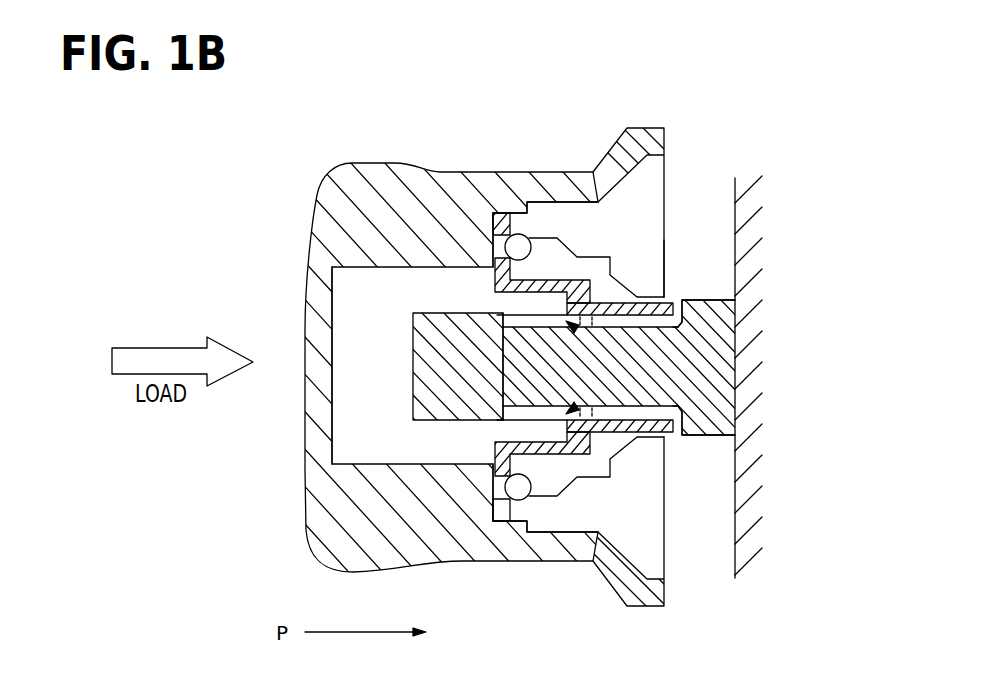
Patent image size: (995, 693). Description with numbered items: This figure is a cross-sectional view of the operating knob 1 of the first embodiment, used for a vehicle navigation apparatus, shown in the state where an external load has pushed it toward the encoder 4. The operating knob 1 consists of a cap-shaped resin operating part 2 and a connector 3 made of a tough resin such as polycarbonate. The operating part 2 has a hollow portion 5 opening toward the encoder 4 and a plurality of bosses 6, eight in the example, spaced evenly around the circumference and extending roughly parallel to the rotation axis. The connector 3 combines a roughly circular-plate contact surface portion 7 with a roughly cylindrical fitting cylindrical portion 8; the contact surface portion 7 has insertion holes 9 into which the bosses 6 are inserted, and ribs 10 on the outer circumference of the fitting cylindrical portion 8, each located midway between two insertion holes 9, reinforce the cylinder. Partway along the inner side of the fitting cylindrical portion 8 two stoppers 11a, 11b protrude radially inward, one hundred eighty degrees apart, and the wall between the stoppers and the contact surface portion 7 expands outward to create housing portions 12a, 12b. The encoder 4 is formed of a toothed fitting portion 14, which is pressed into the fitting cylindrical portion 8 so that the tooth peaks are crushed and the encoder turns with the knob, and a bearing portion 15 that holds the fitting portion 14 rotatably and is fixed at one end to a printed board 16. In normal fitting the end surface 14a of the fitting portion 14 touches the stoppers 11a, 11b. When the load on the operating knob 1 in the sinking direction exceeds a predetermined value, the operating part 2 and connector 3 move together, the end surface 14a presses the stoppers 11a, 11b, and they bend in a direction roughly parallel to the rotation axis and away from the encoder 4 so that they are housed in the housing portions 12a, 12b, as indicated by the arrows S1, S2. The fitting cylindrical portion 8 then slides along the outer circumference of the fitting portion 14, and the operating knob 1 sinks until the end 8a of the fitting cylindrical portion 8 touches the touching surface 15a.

The operating knob 1 is at (562, 359).
The operating part 2 is at (280, 211).
The connector 3 is at (602, 278).
The encoder 4 is at (675, 245).
The hollow portion 5 is at (342, 316).
The bosses 6 is at (499, 205).
The contact surface portion 7 is at (504, 240).
The fitting cylindrical portion 8 is at (612, 281).
The end 8a is at (704, 299).
The insertion holes 9 is at (467, 244).
The ribs 10 is at (622, 267).
The stopper 11a is at (578, 289).
The stopper 11b is at (565, 425).
The housing portion 12a is at (560, 279).
The housing portion 12b is at (558, 455).
The fitting portion 14 is at (423, 362).
The end surface 14a is at (413, 396).
The bearing portion 15 is at (648, 437).
The touching surface 15a is at (568, 345).
The printed board 16 is at (732, 210).
The arrow S1 is at (738, 343).
The arrow S2 is at (737, 395).